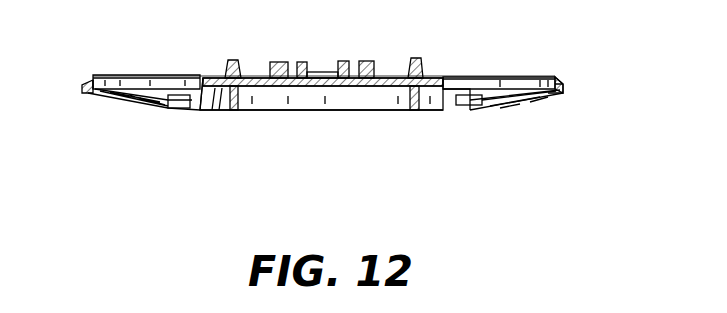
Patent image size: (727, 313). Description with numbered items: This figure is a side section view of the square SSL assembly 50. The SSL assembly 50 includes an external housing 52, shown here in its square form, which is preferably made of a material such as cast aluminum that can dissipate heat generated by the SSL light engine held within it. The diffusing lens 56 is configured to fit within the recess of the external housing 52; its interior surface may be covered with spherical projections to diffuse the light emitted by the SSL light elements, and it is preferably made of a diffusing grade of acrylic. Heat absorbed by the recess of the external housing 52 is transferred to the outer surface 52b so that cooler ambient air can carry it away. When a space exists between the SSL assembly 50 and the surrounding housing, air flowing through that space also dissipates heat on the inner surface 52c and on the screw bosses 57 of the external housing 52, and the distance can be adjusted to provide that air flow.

The SSL assembly 50 is at (268, 188).
The external housing 52 is at (522, 101).
The outer surface 52b is at (564, 93).
The inner surface 52c is at (533, 76).
The diffusing lens 56 is at (330, 111).
The screw bosses 57 is at (243, 62).